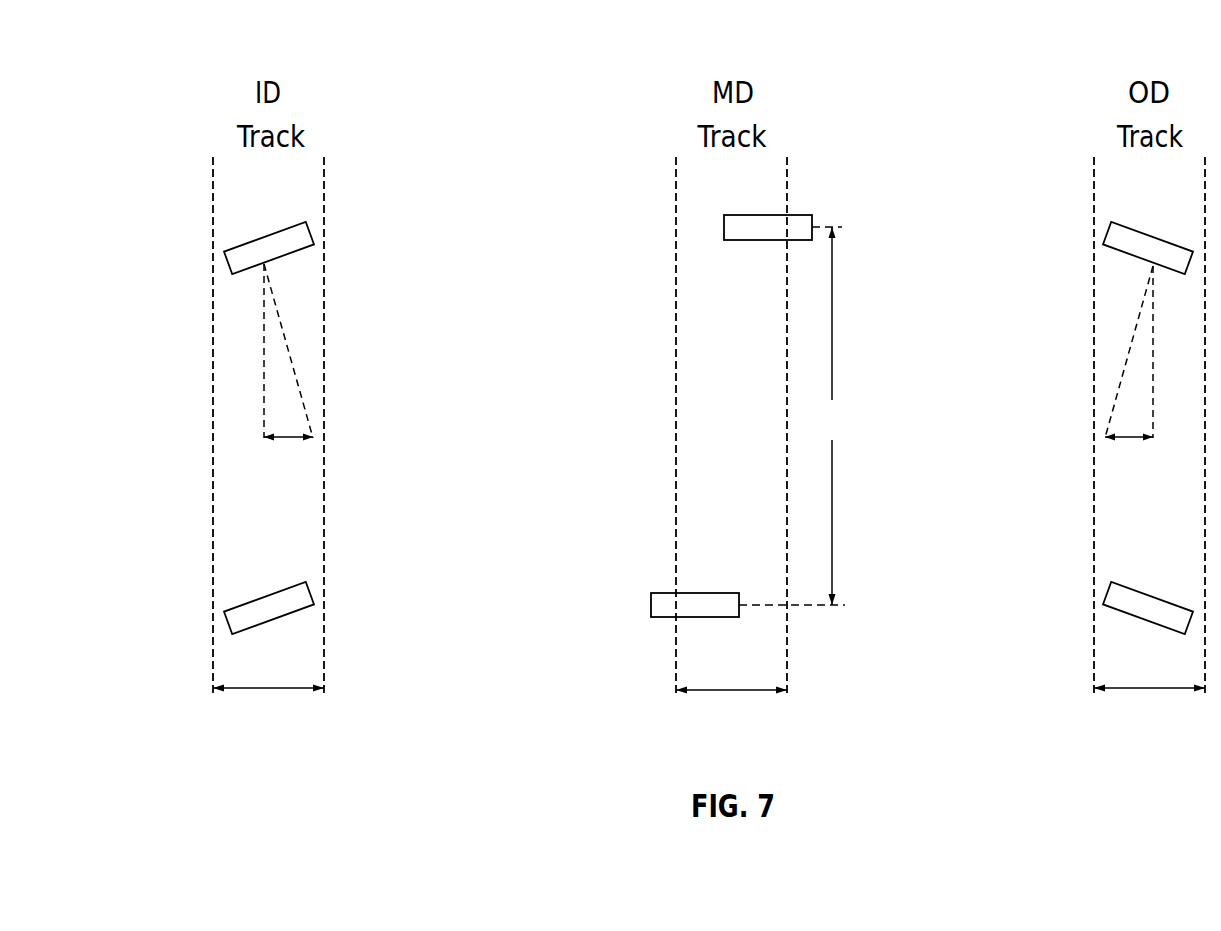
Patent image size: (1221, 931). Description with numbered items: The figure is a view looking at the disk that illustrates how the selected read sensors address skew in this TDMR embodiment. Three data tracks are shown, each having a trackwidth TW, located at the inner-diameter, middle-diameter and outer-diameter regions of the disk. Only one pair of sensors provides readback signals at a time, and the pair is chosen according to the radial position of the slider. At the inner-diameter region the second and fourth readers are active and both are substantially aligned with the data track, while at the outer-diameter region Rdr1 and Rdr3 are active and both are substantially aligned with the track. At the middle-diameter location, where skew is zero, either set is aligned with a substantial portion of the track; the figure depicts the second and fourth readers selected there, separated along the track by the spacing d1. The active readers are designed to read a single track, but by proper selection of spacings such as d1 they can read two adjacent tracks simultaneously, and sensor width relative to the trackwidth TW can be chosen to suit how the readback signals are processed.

The first reader Rdr1 is at (1108, 596).
The third reader Rdr3 is at (1108, 236).
The trackwidth TW is at (268, 688).
The spacing d1 is at (793, 416).